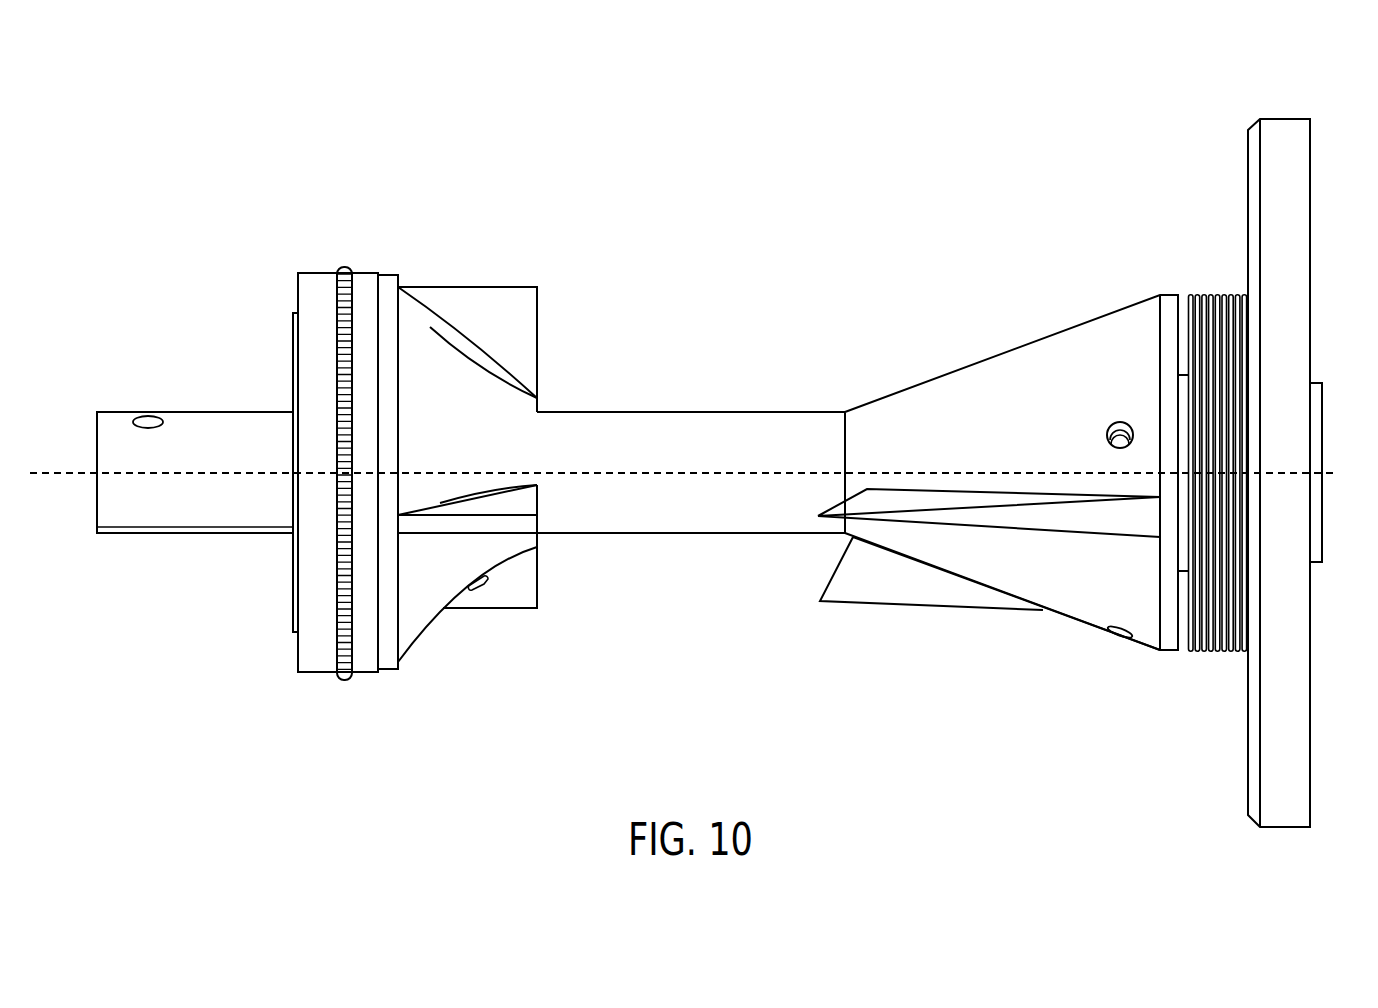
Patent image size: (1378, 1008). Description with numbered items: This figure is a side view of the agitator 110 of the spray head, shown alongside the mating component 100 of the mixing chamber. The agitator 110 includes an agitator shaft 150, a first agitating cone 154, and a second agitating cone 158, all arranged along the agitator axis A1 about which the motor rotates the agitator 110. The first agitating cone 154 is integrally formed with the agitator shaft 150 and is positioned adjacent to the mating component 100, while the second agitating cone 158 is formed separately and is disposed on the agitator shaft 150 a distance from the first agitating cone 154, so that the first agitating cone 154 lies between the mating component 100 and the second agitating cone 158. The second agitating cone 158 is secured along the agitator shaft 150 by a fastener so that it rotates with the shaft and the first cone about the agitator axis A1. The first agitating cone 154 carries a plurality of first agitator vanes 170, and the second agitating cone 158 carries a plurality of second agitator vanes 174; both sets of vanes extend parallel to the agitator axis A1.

The mating component 100 is at (1300, 191).
The agitator 110 is at (348, 147).
The agitator shaft 150 is at (663, 512).
The first agitating cone 154 is at (983, 373).
The second agitating cone 158 is at (439, 405).
The first agitator vanes 170 is at (892, 588).
The second agitator vanes 174 is at (522, 337).
The agitator axis A1 is at (625, 473).